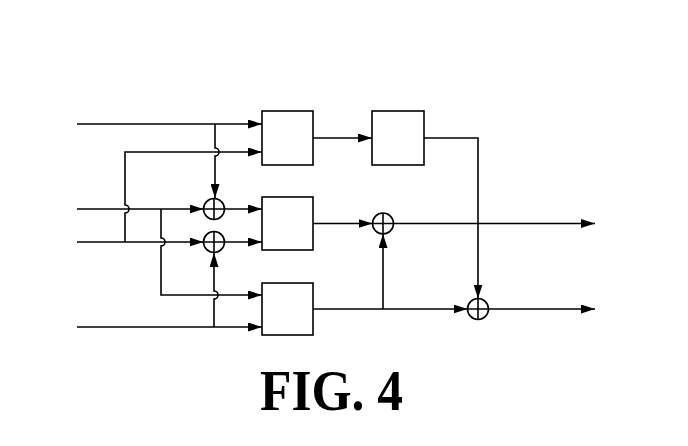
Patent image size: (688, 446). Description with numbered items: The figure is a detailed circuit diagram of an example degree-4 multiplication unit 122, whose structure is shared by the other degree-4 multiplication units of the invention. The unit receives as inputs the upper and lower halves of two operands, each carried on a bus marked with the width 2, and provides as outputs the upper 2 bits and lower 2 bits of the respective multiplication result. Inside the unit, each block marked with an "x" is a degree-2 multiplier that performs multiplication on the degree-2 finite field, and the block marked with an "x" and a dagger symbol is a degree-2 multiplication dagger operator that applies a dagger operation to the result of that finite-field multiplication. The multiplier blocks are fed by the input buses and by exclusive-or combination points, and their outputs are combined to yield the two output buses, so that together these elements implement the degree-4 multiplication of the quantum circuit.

The first degree-4 multiplication unit 122 is at (78, 42).
The two-element bus width 2 is at (336, 210).
The multiplier and adder network 4 is at (307, 223).